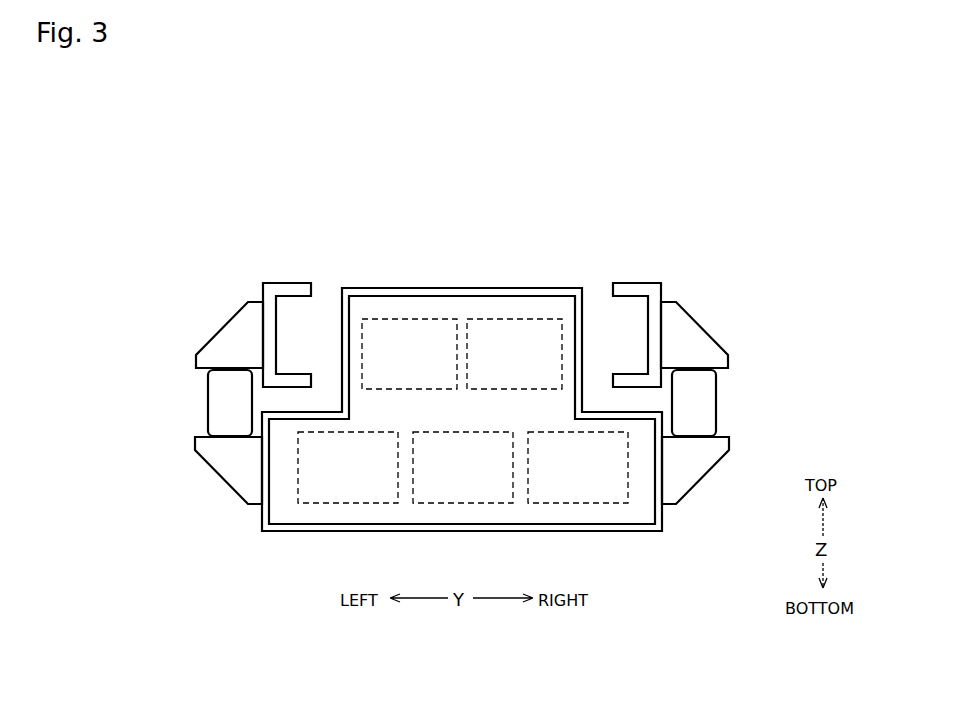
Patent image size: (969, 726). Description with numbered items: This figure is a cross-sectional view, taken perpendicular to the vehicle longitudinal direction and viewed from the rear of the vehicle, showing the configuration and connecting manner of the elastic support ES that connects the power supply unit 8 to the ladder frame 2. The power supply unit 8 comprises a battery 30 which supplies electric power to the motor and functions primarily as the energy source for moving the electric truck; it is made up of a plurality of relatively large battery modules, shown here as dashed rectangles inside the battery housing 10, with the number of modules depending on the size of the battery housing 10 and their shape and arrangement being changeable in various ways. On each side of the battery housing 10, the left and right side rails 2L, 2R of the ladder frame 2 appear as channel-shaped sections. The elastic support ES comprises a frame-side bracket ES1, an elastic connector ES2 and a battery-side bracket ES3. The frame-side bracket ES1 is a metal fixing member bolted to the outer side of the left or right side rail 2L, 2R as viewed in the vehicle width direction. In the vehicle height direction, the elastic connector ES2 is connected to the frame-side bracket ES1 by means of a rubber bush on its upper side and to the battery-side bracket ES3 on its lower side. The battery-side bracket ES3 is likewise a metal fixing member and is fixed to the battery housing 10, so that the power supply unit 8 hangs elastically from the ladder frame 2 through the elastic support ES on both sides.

The power supply unit 8 is at (495, 238).
The battery housing 10 is at (452, 288).
The ladder frame 2 is at (462, 308).
The left side rail 2L is at (288, 288).
The right side rail 2R is at (637, 288).
The battery 30 is at (387, 318).
The elastic support ES is at (132, 343).
The frame-side bracket ES1 is at (205, 357).
The elastic connector ES2 is at (215, 403).
The battery-side bracket ES3 is at (205, 445).